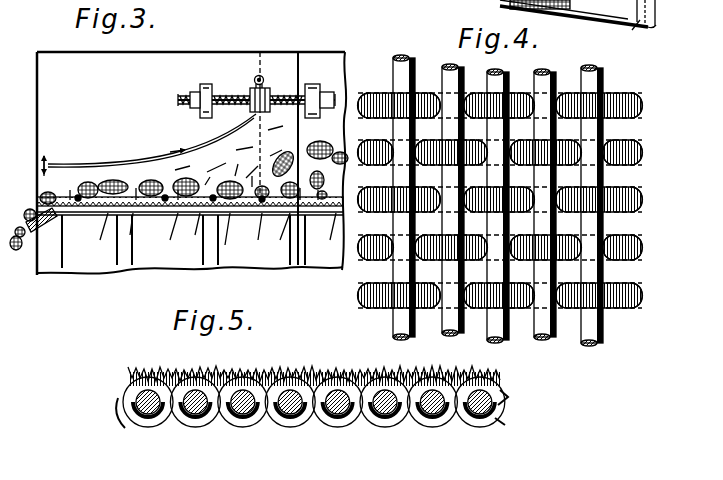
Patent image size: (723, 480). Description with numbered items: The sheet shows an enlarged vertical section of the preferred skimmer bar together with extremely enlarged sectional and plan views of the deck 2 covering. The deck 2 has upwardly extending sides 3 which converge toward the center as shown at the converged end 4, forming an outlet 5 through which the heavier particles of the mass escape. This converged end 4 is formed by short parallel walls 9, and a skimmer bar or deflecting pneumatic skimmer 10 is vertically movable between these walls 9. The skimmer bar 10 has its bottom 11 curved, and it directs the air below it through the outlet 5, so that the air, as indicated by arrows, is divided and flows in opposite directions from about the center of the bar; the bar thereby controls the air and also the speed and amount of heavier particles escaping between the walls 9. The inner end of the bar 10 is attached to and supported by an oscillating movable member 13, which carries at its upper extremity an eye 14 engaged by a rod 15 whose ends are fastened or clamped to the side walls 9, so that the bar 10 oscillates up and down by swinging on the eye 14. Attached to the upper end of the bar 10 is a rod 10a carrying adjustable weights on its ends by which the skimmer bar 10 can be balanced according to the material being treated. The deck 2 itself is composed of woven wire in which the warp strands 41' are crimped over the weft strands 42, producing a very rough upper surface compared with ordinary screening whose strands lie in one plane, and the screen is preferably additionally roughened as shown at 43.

In FIG. 3, the short parallel walls 9 is at (84, 82).
In FIG. 3, the skimmer bar 10 is at (178, 101).
In FIG. 3, the rod 10a is at (204, 85).
In FIG. 3, the oscillating movable member 13 is at (252, 93).
In FIG. 3, the eye 14 is at (261, 77).
In FIG. 3, the rod 15 is at (257, 77).
In FIG. 3, the converged end 4 is at (319, 58).
In FIG. 3, the bottom of skimmer bar 11 is at (175, 162).
In FIG. 3, the outlet 5 is at (229, 208).
In FIG. 4, the upwardly extending sides 3 is at (630, 10).
In FIG. 4, the warp strands 41' is at (451, 196).
In FIG. 5, the warp strands 41' is at (314, 377).
In FIG. 4, the weft strands 42 is at (583, 325).
In FIG. 5, the weft strands 42 is at (235, 412).
In FIG. 5, the roughening 43 is at (300, 380).
In FIG. 5, the deck 2 is at (359, 438).